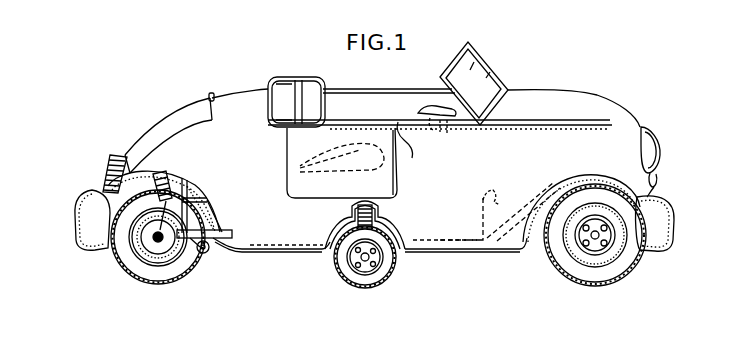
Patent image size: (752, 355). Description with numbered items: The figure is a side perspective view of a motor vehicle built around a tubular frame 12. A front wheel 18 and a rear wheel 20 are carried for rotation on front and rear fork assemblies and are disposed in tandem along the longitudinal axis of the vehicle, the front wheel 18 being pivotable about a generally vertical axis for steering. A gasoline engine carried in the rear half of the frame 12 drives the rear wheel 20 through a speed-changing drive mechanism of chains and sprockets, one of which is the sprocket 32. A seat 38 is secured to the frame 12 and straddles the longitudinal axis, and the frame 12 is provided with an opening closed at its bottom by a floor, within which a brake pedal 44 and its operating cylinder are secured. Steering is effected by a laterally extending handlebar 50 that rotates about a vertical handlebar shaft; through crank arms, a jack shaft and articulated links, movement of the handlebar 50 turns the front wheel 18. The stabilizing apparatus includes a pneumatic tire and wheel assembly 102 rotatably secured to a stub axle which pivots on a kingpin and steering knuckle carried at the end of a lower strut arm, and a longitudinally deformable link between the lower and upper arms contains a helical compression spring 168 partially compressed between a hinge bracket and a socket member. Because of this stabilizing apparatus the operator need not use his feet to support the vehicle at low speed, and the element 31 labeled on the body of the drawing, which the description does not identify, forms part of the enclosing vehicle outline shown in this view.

The vehicle body 31 is at (622, 110).
The seat 38 is at (289, 81).
The handlebar 50 is at (452, 101).
The rear wheel 20 is at (140, 273).
The sprocket 32 is at (148, 240).
The tubular frame 12 is at (218, 243).
The helical compression spring 168 is at (338, 240).
The pneumatic tire and wheel assembly 102 is at (388, 283).
The brake pedal 44 is at (483, 240).
The front wheel 18 is at (637, 262).